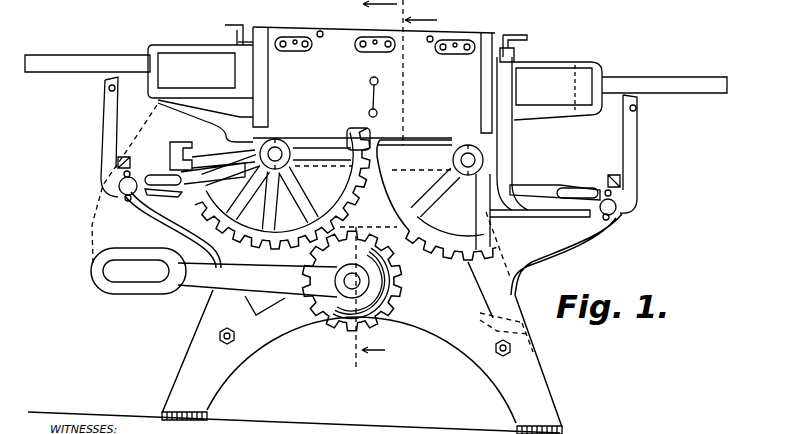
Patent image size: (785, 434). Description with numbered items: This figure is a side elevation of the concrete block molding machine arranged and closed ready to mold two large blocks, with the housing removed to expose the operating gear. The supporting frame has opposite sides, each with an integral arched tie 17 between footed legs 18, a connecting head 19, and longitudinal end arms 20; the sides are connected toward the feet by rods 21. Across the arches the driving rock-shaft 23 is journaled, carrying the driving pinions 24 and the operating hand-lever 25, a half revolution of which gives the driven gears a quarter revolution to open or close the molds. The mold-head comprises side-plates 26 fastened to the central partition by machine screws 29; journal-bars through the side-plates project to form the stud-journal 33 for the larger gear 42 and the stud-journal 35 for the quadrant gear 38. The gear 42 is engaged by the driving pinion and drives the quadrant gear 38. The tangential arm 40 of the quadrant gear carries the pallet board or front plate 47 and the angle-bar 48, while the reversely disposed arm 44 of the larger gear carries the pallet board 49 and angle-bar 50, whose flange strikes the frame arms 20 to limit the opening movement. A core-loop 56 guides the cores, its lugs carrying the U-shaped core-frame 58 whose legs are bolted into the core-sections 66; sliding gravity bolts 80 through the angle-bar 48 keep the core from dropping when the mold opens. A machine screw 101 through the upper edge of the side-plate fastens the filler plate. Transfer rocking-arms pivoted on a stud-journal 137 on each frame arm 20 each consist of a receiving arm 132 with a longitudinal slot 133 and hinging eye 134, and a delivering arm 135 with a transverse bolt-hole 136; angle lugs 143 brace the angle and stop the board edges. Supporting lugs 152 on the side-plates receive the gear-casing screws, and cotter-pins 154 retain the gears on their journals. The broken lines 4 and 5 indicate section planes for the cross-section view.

The irregular broken line 4 is at (405, 103).
The irregular broken line 5 is at (358, 9).
The arched tie 17 is at (361, 368).
The footed legs 18 is at (362, 344).
The connecting head 19 is at (282, 189).
The longitudinal end arms 20 is at (371, 147).
The rods 21 is at (507, 356).
The driving rock-shaft 23 is at (348, 300).
The driving pinions 24 is at (391, 323).
The operating hand-lever 25 is at (137, 290).
The side-plates 26 is at (356, 102).
The machine screws 29 is at (371, 79).
The stud-journal 33 is at (291, 147).
The stud-journal 35 is at (456, 150).
The quadrant gear 38 is at (410, 214).
The arm 40 is at (512, 125).
The gear 42 is at (145, 242).
The arm 44 is at (247, 102).
The pallet board or front plate 47 is at (488, 92).
The angle-bar 48 is at (514, 52).
The pallet board 49 is at (262, 90).
The angle-bar 50 is at (238, 42).
The core-loop 56 is at (599, 90).
The U-shaped core-frame 58 is at (703, 88).
The core-sections 66 is at (558, 91).
The sliding gravity bolts 80 is at (512, 34).
The machine screw 101 is at (429, 42).
The receiving arm 132 is at (545, 193).
The longitudinal slot 133 is at (569, 192).
The hinging eye 134 is at (618, 207).
The delivering arm 135 is at (638, 158).
The transverse bolt-hole 136 is at (636, 111).
The stud-journal 137 is at (618, 214).
The angle lugs 143 is at (612, 177).
The supporting lugs 152 is at (445, 49).
The cotter-pins 154 is at (466, 146).